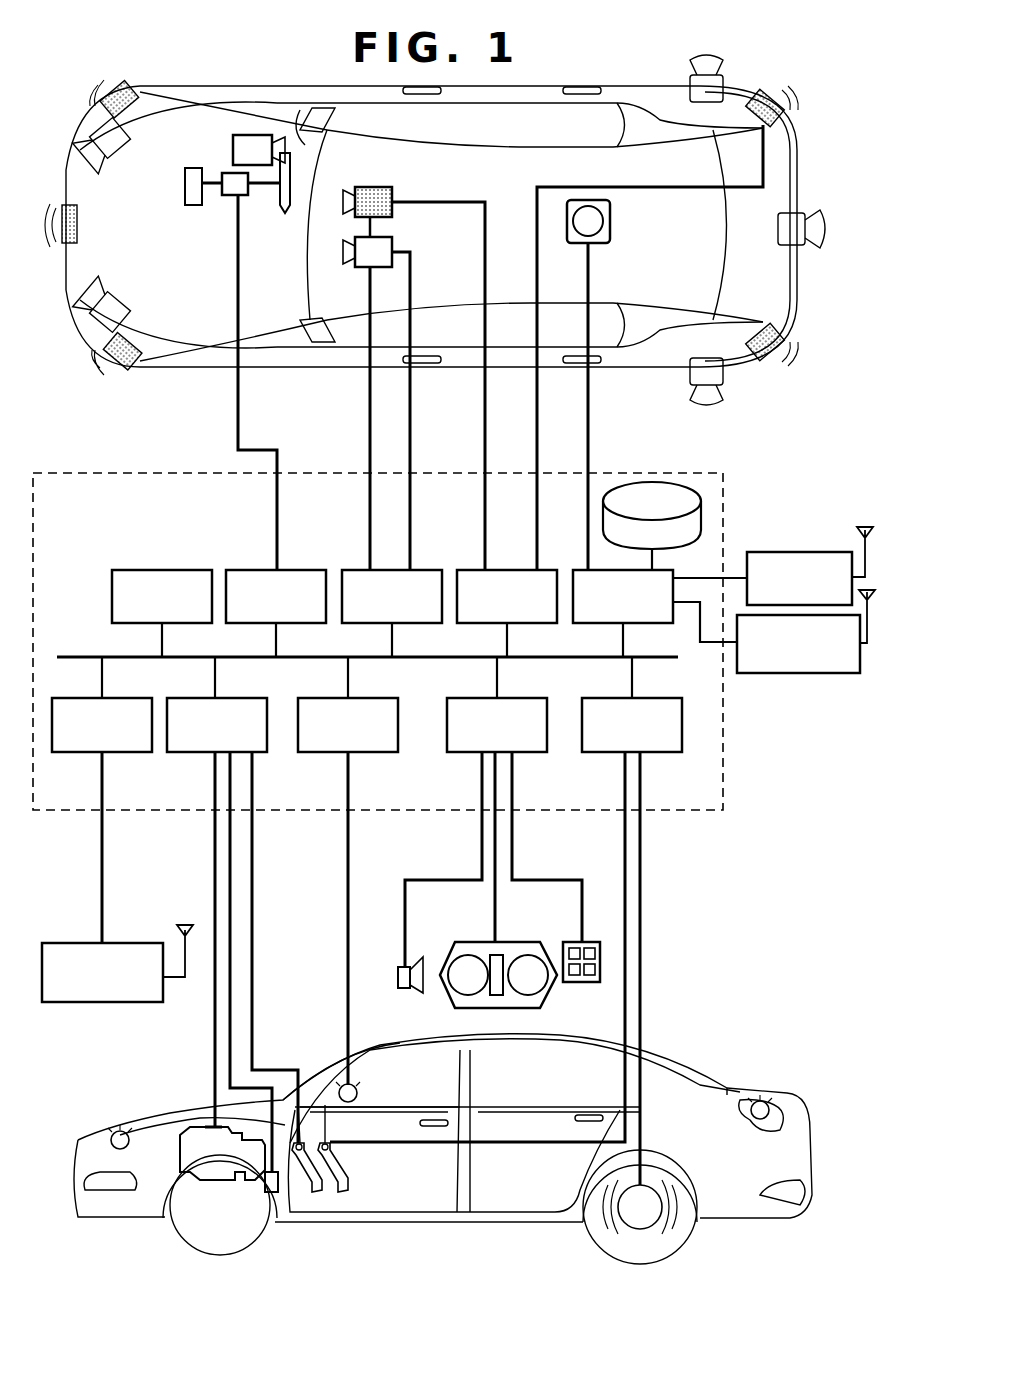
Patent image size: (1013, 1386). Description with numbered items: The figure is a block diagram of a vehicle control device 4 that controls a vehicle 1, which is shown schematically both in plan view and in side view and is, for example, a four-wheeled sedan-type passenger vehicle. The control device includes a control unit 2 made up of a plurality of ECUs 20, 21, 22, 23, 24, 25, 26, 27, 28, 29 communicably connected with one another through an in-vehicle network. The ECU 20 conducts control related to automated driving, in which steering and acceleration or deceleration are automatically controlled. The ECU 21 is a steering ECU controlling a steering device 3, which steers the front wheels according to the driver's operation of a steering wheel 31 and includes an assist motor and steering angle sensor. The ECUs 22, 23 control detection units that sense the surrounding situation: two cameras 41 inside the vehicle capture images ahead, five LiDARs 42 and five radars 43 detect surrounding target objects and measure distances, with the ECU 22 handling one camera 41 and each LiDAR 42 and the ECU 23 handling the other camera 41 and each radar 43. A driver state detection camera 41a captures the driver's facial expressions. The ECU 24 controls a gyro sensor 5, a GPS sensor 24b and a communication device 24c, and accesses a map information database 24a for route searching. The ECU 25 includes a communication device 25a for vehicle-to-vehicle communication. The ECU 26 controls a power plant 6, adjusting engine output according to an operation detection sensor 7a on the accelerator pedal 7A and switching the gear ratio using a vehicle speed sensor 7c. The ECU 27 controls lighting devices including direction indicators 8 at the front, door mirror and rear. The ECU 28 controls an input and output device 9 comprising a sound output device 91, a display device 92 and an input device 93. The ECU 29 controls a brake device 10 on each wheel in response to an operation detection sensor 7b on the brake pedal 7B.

The vehicle 1 is at (812, 138).
The control unit 2 is at (718, 822).
The steering device 3 is at (195, 207).
The vehicle control device 4 is at (80, 52).
The gyro sensor 5 is at (612, 218).
The power plant 6 is at (185, 1127).
The operation detection sensor 7a is at (305, 1105).
The operation detection sensor 7b is at (330, 1140).
The vehicle speed sensor 7c is at (275, 1195).
The accelerator pedal 7A is at (332, 1185).
The brake pedal 7B is at (355, 1165).
The direction indicators 8 is at (110, 1135).
The input and output device 9 is at (430, 1010).
The brake device 10 is at (645, 1235).
The ECU 20 is at (190, 570).
The ECU 21 is at (302, 570).
The ECU 22 is at (389, 570).
The ECU 23 is at (506, 570).
The ECU 24 is at (576, 570).
The map information database 24a is at (648, 482).
The GPS sensor 24b is at (803, 552).
The communication device 24c is at (800, 673).
The ECU 25 is at (128, 752).
The communication device 25a is at (105, 1002).
The ECU 26 is at (192, 752).
The ECU 27 is at (375, 752).
The ECU 28 is at (533, 752).
The ECU 29 is at (665, 752).
The steering wheel 31 is at (283, 220).
The camera 41 is at (400, 192).
The driver state detection camera 41a is at (255, 135).
The LiDAR 42 is at (108, 160).
The radar 43 is at (138, 90).
The sound output device 91 is at (396, 972).
The display device 92 is at (455, 955).
The input device 93 is at (578, 982).